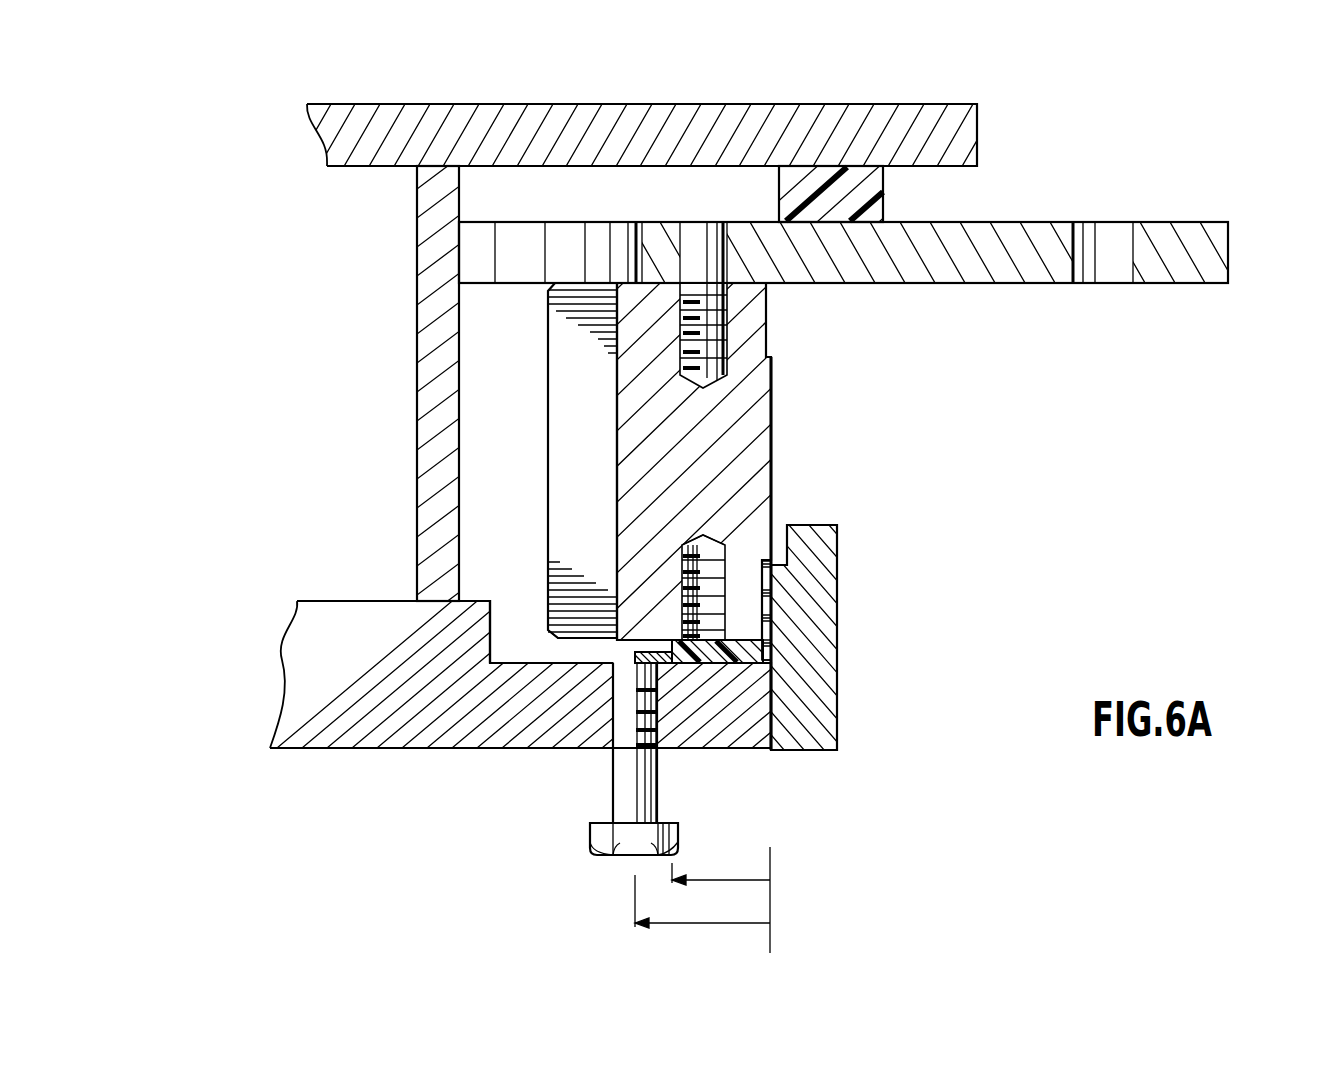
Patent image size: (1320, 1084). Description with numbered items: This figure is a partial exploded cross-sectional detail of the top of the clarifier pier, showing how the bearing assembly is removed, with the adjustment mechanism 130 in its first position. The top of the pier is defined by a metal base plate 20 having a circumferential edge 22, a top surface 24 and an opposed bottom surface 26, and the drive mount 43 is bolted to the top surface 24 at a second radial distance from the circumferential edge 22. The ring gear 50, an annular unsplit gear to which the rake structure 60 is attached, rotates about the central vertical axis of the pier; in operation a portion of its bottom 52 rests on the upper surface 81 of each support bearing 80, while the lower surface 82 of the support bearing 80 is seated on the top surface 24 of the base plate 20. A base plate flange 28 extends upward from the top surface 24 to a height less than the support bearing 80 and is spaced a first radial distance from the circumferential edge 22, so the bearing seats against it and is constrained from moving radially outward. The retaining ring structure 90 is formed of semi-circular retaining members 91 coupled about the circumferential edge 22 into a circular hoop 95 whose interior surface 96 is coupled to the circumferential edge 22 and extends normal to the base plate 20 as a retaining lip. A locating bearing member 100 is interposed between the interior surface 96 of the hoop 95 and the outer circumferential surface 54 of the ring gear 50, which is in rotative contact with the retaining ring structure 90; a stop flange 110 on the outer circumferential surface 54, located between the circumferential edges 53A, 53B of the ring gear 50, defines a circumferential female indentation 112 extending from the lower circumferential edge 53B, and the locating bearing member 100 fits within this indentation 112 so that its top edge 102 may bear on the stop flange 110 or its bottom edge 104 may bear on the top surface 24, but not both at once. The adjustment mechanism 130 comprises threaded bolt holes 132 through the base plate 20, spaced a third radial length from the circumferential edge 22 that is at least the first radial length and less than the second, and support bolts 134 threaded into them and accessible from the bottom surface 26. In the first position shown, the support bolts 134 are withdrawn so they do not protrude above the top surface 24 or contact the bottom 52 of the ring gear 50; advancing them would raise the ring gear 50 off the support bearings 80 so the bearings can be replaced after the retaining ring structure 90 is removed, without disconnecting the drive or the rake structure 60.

The base plate 20 is at (389, 722).
The circumferential edge 22 is at (762, 750).
The top surface 24 is at (530, 663).
The bottom surface 26 is at (476, 750).
The base plate flange 28 is at (642, 640).
The drive mount 43 is at (355, 150).
The ring gear 50 is at (570, 422).
The bottom of ring gear 52 is at (600, 640).
The circumferential edge of ring gear 53A is at (767, 290).
The circumferential edge of ring gear 53B is at (763, 640).
The outer circumferential surface 54 is at (770, 423).
The rake structure 60 is at (1177, 285).
The support bearing 80 is at (697, 652).
The upper surface of support bearing 81 is at (647, 652).
The lower surface of support bearing 82 is at (706, 663).
The retaining ring structure 90 is at (837, 528).
The retaining member 91 is at (838, 752).
The circular hoop 95 is at (798, 752).
The interior surface 96 is at (770, 677).
The locating bearing member 100 is at (772, 572).
The top edge 102 is at (765, 556).
The bottom edge 104 is at (765, 735).
The stop flange 110 is at (770, 355).
The circumferential female indentation 112 is at (767, 322).
The adjustment mechanism 130 is at (712, 813).
The threaded bolt hole 132 is at (612, 750).
The support bolt 134 is at (632, 798).